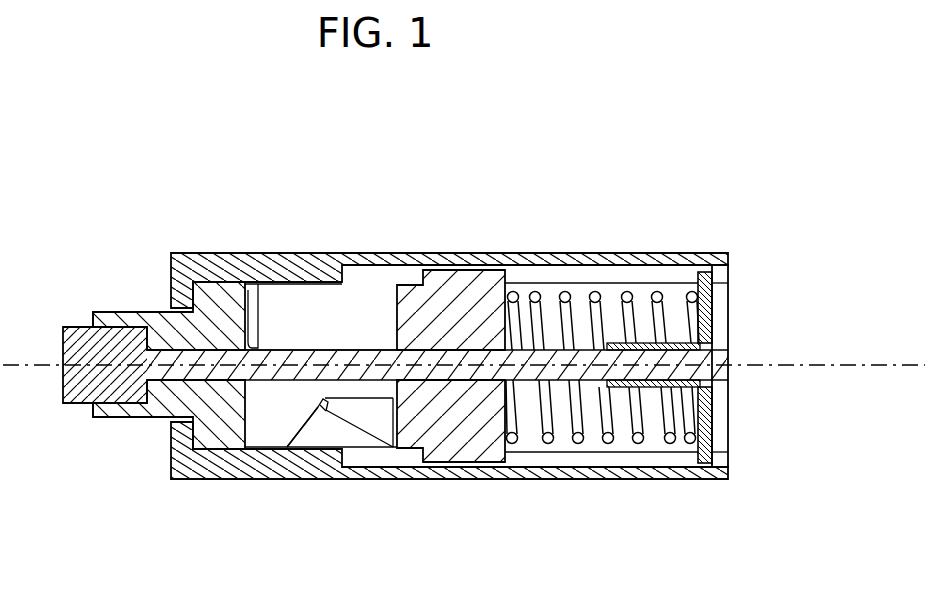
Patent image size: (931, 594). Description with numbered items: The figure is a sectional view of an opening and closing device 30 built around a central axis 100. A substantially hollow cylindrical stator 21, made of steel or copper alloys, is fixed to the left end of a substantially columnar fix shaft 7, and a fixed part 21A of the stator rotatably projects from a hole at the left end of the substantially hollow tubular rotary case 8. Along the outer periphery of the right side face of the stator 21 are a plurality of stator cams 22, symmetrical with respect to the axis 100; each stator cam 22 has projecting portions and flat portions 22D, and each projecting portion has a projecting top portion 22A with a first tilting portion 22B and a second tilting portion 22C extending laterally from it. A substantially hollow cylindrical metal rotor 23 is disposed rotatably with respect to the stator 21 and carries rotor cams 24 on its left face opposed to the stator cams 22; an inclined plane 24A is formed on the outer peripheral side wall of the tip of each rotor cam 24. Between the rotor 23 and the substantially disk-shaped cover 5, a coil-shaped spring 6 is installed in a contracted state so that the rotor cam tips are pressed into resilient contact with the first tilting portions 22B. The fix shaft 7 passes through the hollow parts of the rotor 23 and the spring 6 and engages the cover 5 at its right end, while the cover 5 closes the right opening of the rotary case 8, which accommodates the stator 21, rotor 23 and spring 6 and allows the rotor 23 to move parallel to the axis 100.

The cover 5 is at (703, 462).
The coil-shaped spring 6 is at (579, 441).
The fix shaft 7 is at (83, 332).
The rotary case 8 is at (597, 253).
The stator 21 is at (212, 432).
The fixed part 21A is at (123, 417).
The stator cam 22 is at (265, 440).
The projecting top portion 22A is at (321, 400).
The first tilting portion 22B is at (287, 446).
The second tilting portion 22C is at (284, 358).
The flat portion 22D is at (256, 346).
The rotor 23 is at (471, 278).
The rotor cam 24 is at (375, 425).
The inclined plane 24A is at (319, 409).
The opening and closing device 30 is at (692, 191).
The central axis 100 is at (762, 362).